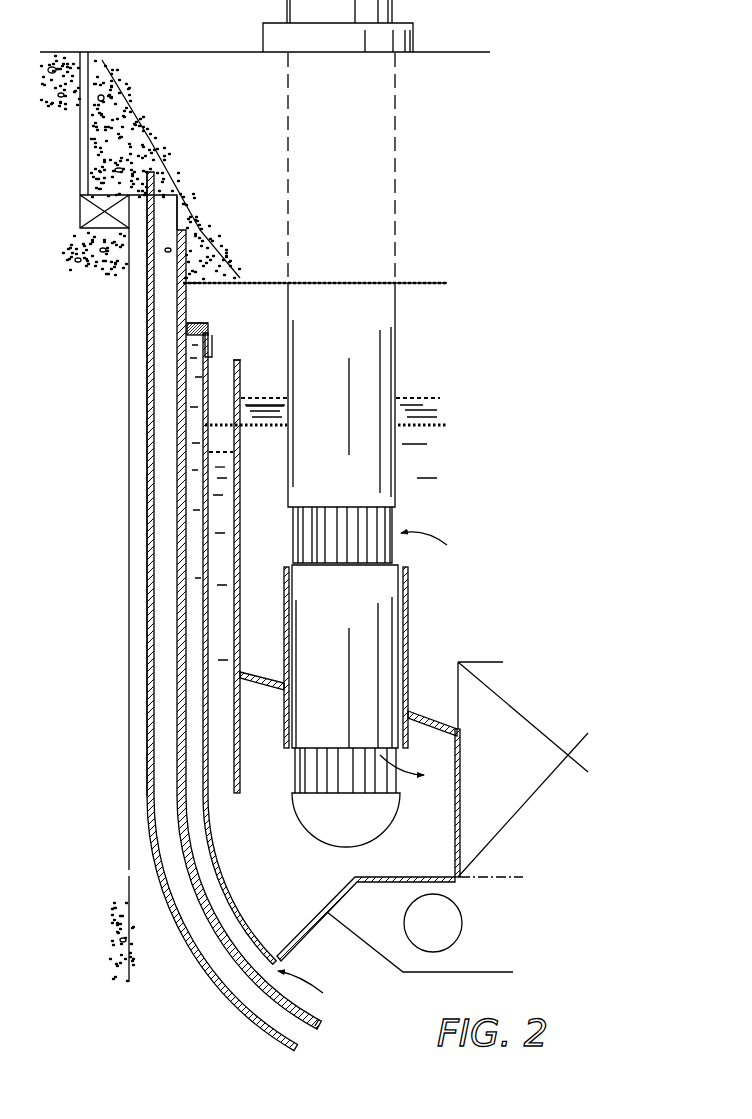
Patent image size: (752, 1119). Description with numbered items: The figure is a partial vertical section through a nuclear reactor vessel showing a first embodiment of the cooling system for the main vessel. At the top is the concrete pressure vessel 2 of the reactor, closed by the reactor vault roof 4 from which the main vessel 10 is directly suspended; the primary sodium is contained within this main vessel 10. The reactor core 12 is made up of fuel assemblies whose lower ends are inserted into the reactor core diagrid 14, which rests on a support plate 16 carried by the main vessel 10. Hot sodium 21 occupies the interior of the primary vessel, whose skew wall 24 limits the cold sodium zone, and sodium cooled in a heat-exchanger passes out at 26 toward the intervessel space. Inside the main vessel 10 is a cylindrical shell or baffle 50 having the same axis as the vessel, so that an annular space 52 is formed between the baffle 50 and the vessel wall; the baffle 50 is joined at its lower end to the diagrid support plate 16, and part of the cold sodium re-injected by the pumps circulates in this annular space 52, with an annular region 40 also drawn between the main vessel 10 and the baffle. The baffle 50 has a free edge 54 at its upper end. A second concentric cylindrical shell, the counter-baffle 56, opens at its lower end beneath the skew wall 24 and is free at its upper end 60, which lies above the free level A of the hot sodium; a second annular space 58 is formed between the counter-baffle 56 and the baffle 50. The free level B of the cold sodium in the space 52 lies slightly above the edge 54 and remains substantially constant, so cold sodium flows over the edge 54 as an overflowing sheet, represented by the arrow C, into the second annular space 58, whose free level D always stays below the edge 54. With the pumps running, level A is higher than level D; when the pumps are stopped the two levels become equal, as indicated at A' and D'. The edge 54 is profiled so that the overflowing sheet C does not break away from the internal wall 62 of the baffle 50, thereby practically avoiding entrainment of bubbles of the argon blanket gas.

The concrete pressure vessel 2 is at (92, 307).
The reactor vault roof 4 is at (236, 174).
The main vessel 10 is at (182, 552).
The reactor core 12 is at (496, 659).
The reactor core diagrid 14 is at (568, 818).
The support plate 16 is at (518, 938).
The hot sodium 21 is at (462, 474).
The skew wall 24 is at (434, 730).
The heat-exchanger outlet 26 is at (377, 585).
The annulus 40 is at (150, 590).
The cylindrical shell or baffle 50 is at (196, 386).
The annular space 52 is at (195, 618).
The free edge 54 is at (187, 337).
The counter-baffle 56 is at (207, 518).
The second annular space 58 is at (222, 643).
The upper end of counter-baffle 60 is at (238, 362).
The internal wall of the baffle 62 is at (210, 430).
The free level of hot sodium A is at (282, 373).
The hot sodium level with pumps stopped A' is at (288, 405).
The free level of cold sodium in space 52 B is at (200, 318).
The overflowing sheet C is at (203, 335).
The free level of cold sodium in space 58 D is at (244, 475).
The cold sodium level with pumps stopped D' is at (245, 449).